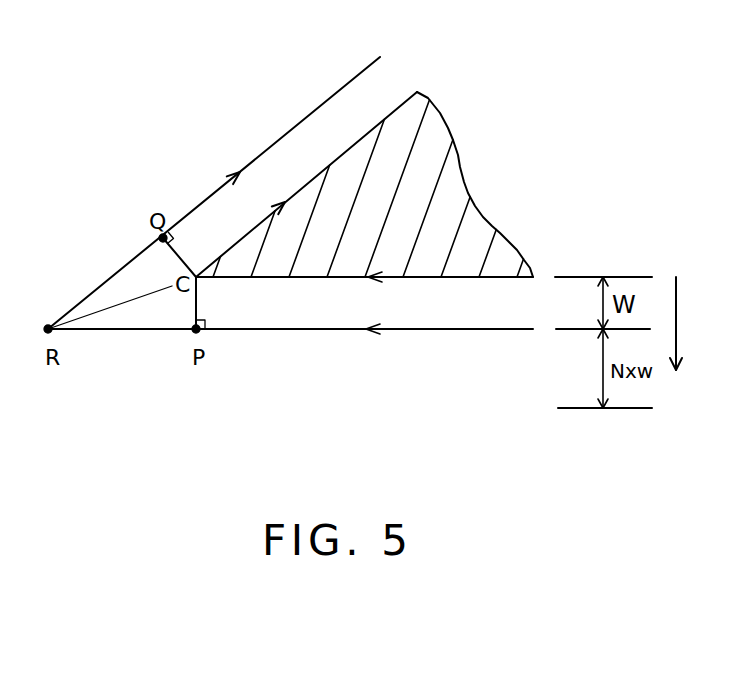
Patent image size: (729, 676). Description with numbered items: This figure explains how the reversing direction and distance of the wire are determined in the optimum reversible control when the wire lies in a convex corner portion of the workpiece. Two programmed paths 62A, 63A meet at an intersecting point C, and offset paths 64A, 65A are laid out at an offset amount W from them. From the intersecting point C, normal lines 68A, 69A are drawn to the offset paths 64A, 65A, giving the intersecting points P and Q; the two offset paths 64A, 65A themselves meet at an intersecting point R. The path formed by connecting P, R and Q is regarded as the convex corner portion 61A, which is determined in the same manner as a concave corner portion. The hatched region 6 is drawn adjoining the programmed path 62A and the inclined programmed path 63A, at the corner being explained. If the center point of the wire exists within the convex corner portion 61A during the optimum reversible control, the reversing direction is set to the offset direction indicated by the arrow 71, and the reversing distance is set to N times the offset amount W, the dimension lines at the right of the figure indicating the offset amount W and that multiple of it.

The Fresnel zone plate pattern segment (hatched profile) 6 is at (462, 165).
The convex corner portion 61A is at (137, 332).
The programmed path 62A is at (455, 278).
The programmed path 63A is at (352, 140).
The offset path 64A is at (330, 332).
The offset path 65A is at (281, 138).
The normal line 68A is at (200, 302).
The normal line 69A is at (182, 258).
The arrow 71 is at (697, 323).